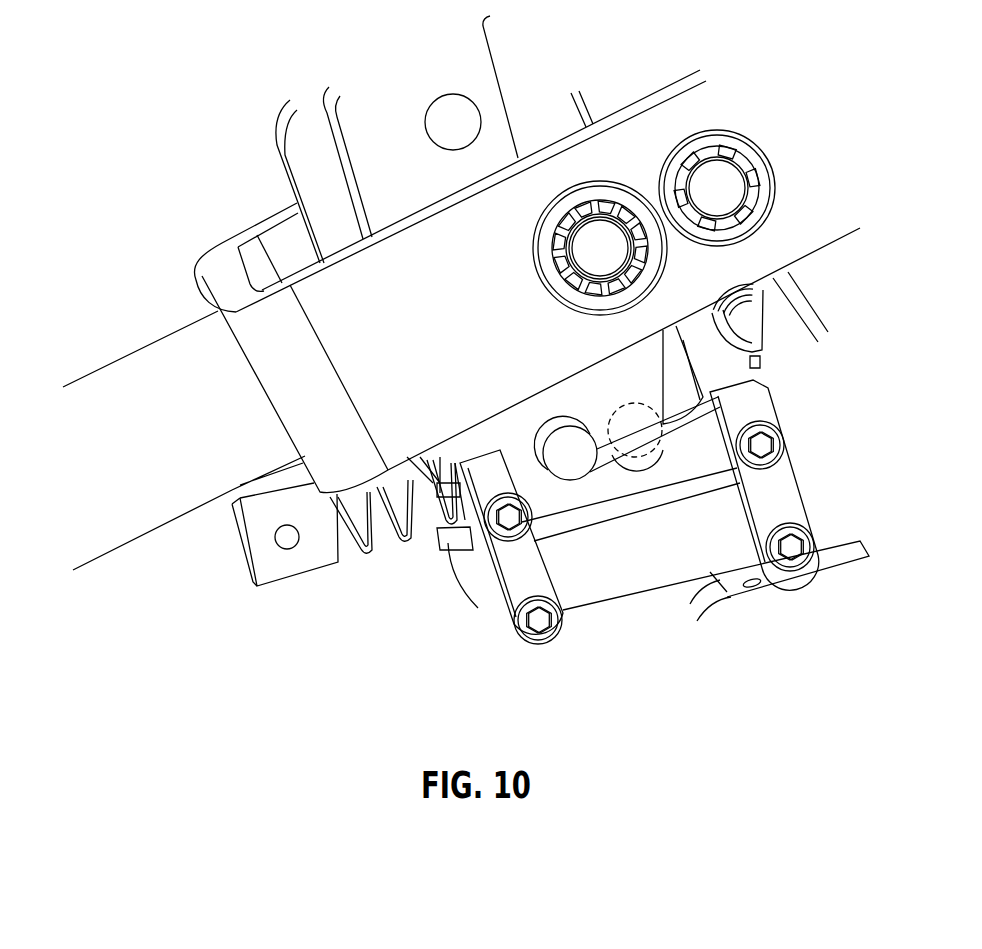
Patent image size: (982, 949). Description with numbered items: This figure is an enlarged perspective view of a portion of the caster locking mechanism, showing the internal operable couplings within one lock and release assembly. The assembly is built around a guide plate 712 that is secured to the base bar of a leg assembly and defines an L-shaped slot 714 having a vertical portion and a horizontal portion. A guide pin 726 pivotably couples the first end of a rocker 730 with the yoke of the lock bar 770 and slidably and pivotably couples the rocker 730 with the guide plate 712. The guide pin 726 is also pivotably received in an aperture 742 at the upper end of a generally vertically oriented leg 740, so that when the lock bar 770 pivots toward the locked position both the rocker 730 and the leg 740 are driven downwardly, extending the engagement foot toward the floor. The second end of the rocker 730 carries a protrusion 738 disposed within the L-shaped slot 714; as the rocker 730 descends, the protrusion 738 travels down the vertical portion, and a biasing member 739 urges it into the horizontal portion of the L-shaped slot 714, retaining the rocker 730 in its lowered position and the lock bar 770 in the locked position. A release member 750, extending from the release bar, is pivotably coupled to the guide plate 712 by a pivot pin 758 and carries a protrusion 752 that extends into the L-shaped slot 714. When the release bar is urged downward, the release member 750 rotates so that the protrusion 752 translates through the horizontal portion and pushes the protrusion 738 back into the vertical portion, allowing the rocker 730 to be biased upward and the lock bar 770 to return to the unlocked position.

The guide plate 712 is at (575, 500).
The L-shaped slot 714 is at (677, 360).
The guide pin 726 is at (602, 240).
The rocker 730 is at (645, 383).
The protrusion 738 is at (712, 396).
The biasing member 739 is at (372, 553).
The leg 740 is at (370, 87).
The aperture 742 is at (481, 112).
The release member 750 is at (428, 500).
The protrusion 752 is at (575, 462).
The pivot pin 758 is at (457, 110).
The lock bar 770 is at (130, 512).